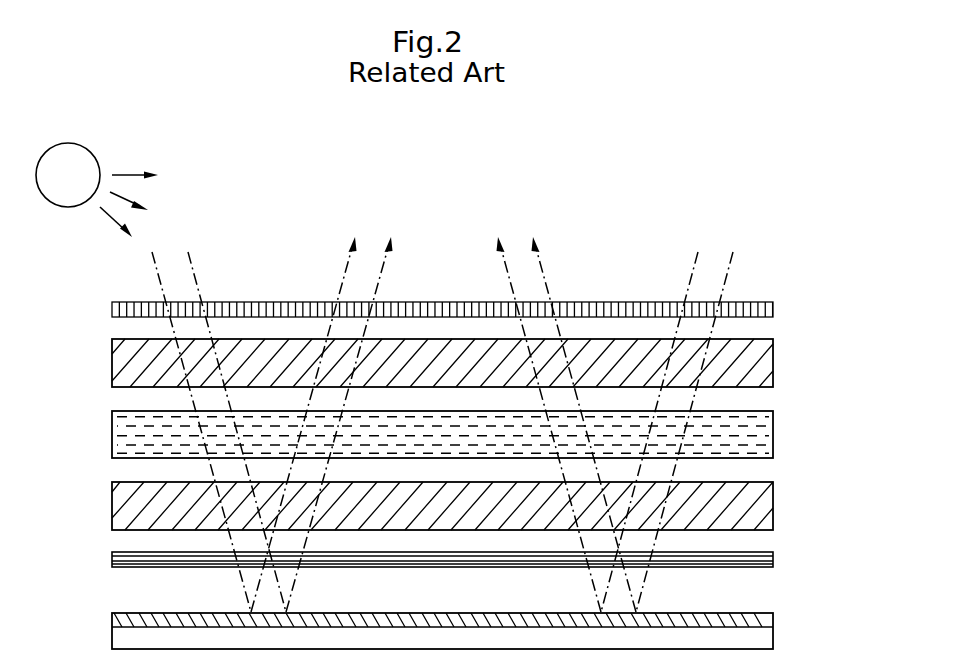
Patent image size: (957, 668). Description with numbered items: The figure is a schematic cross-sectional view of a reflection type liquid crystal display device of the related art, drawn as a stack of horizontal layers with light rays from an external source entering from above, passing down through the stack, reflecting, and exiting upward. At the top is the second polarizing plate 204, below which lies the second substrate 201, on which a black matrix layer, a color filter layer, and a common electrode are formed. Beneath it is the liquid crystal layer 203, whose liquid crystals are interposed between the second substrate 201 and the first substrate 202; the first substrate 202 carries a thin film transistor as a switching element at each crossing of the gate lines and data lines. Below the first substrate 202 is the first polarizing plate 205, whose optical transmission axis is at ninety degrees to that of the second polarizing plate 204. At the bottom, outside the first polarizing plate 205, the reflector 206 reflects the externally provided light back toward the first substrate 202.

The second substrate 201 is at (773, 362).
The first substrate 202 is at (773, 506).
The liquid crystal layer 203 is at (773, 434).
The second polarizing plate 204 is at (773, 309).
The first polarizing plate 205 is at (773, 559).
The reflector 206 is at (773, 631).